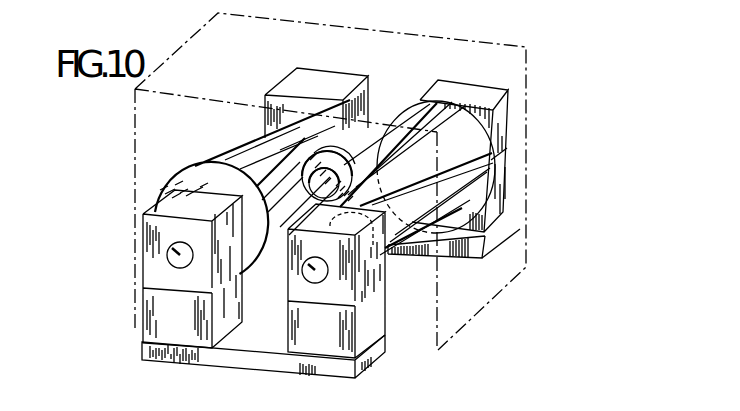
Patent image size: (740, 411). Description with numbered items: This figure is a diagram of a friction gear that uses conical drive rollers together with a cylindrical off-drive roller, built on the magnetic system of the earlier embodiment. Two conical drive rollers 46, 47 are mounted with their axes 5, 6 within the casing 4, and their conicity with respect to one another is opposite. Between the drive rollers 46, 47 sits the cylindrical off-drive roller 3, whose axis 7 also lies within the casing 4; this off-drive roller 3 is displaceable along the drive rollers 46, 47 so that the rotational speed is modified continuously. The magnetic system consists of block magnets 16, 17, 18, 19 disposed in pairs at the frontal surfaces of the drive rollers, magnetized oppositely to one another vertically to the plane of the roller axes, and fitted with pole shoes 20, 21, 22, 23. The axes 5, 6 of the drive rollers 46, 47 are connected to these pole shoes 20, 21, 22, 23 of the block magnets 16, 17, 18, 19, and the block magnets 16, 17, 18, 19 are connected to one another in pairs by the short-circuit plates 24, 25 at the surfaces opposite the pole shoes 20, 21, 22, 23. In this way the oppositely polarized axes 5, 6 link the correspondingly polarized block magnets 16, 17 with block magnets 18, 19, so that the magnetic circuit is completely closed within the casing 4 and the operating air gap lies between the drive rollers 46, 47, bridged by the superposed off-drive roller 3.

The casing 4 is at (173, 52).
The pole shoe 23 is at (290, 82).
The axis of off-drive roller 7 is at (350, 112).
The off-drive roller 3 is at (332, 151).
The block magnet 19 is at (360, 135).
The pole shoe 22 is at (500, 138).
The block magnet 18 is at (506, 192).
The conical drive roller 46 is at (193, 178).
The axis 5 is at (170, 253).
The pole shoe 20 is at (150, 276).
The block magnet 16 is at (150, 314).
The axis 6 is at (318, 272).
The pole shoe 21 is at (365, 296).
The block magnet 17 is at (370, 342).
The short-circuit plate 24 is at (318, 366).
The conical drive roller 47 is at (455, 205).
The short-circuit plate 25 is at (496, 240).